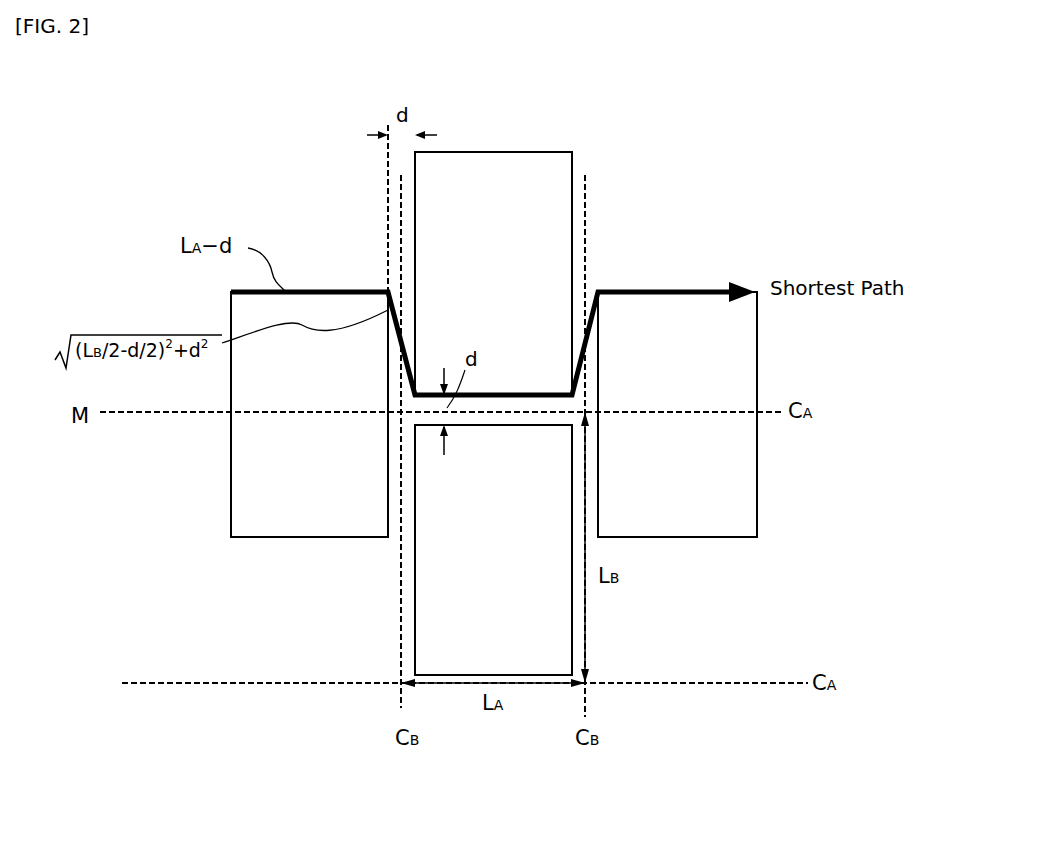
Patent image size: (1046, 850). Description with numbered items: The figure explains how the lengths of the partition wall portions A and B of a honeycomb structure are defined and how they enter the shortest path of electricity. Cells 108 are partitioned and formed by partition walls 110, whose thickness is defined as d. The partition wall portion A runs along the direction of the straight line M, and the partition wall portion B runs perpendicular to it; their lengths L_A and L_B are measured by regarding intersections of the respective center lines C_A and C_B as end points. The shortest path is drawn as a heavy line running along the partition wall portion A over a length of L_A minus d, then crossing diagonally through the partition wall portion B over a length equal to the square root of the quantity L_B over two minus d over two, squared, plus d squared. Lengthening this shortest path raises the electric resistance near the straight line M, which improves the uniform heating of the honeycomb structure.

The cell 108 is at (642, 303).
The partition wall 110 is at (402, 297).
The partition wall portion A is at (520, 418).
The partition wall portion B is at (400, 602).